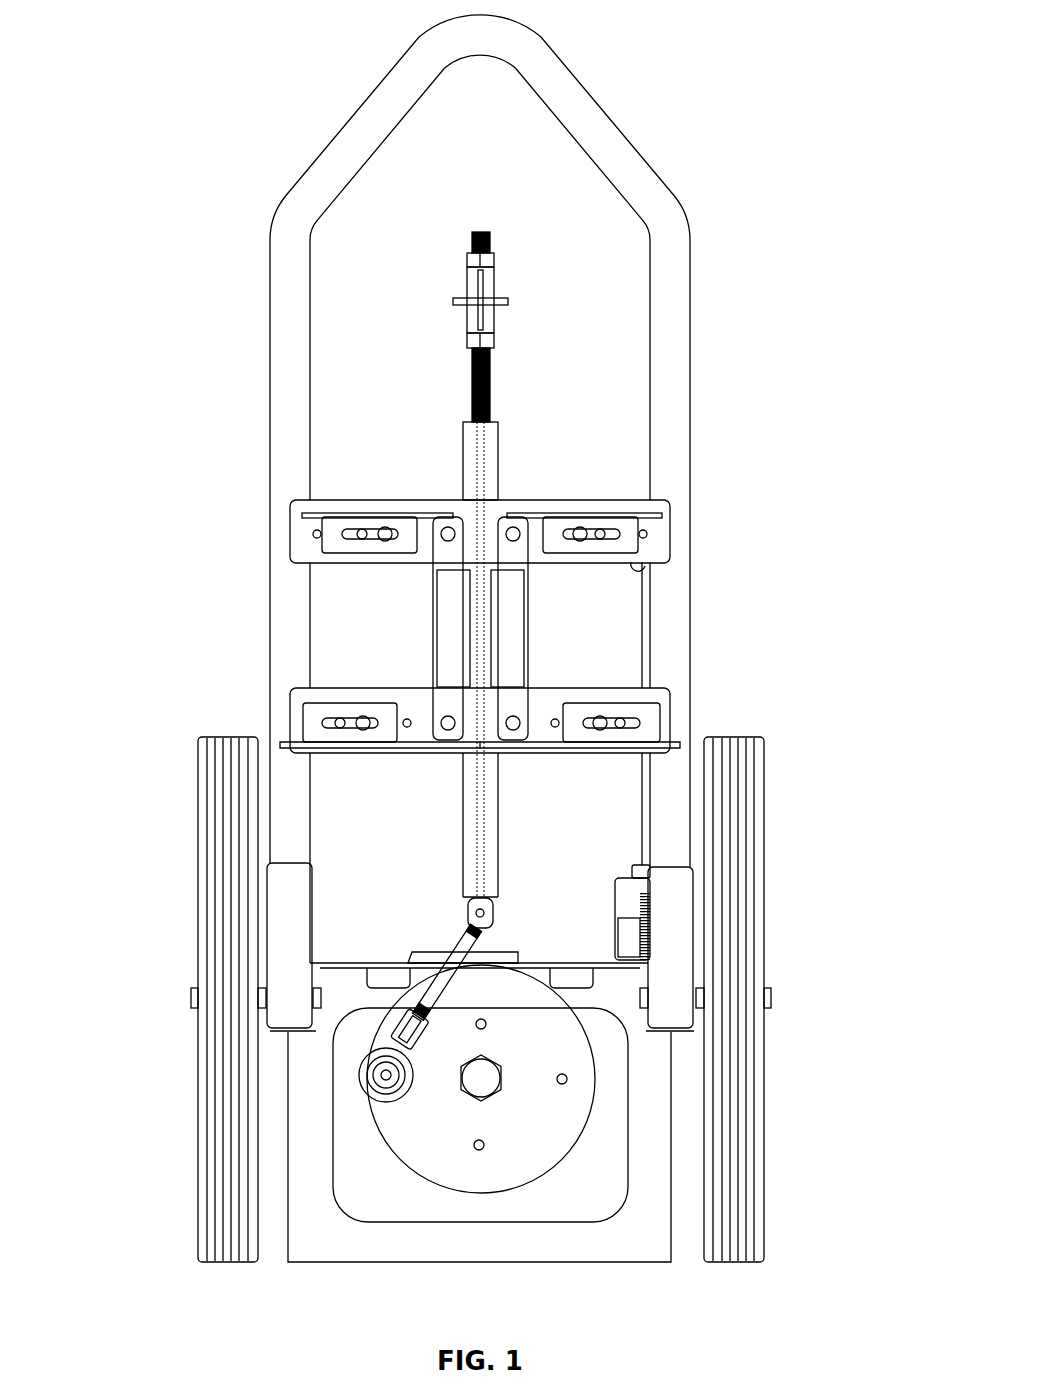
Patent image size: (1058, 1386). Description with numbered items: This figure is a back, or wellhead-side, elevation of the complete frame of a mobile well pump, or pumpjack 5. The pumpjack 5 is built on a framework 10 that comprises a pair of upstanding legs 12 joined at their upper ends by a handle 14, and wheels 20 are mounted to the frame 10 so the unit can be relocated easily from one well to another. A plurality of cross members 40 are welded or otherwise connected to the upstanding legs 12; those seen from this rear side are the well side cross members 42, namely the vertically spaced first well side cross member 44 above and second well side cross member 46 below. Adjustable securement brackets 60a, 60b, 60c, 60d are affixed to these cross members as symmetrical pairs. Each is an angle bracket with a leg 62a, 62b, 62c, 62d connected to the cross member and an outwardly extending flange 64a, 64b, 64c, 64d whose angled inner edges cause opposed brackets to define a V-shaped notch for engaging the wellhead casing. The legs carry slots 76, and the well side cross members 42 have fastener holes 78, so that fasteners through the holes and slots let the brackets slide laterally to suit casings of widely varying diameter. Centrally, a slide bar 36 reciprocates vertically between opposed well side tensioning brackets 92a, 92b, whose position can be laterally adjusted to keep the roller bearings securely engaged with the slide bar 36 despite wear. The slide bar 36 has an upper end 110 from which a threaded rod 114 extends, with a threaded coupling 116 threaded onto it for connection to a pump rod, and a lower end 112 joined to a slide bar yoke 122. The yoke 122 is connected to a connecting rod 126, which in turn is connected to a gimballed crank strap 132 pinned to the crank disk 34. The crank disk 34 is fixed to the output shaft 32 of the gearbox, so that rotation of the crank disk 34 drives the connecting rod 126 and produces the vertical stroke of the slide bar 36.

The pumpjack 5 is at (305, 78).
The framework 10 is at (692, 205).
The upstanding legs 12 is at (290, 378).
The handle 14 is at (612, 103).
The wheels 20 is at (225, 862).
The output shaft 32 is at (497, 1068).
The crank disk 34 is at (562, 1112).
The slide bar 36 is at (500, 855).
The cross members 40 is at (672, 703).
The well side cross members 42 is at (660, 535).
The first well side cross member 44 is at (300, 547).
The second well side cross member 46 is at (284, 694).
The adjustable securement bracket 60a is at (393, 512).
The adjustable securement bracket 60b is at (575, 512).
The adjustable securement bracket 60c is at (388, 747).
The adjustable securement bracket 60d is at (580, 748).
The leg 62a is at (337, 547).
The leg 62b is at (623, 548).
The leg 62c is at (318, 730).
The leg 62d is at (655, 718).
The flange 64a is at (310, 516).
The flange 64b is at (628, 513).
The flange 64c is at (313, 745).
The flange 64d is at (655, 744).
The slots 76 is at (380, 540).
The fastener holes 78 is at (353, 532).
The well side tensioning bracket 92a is at (447, 627).
The well side tensioning bracket 92b is at (515, 627).
The upper end 110 is at (463, 422).
The lower end 112 is at (465, 897).
The threaded rod 114 is at (491, 376).
The threaded coupling 116 is at (497, 283).
The slide bar yoke 122 is at (492, 913).
The connecting rod 126 is at (437, 992).
The gimballed crank strap 132 is at (387, 1092).